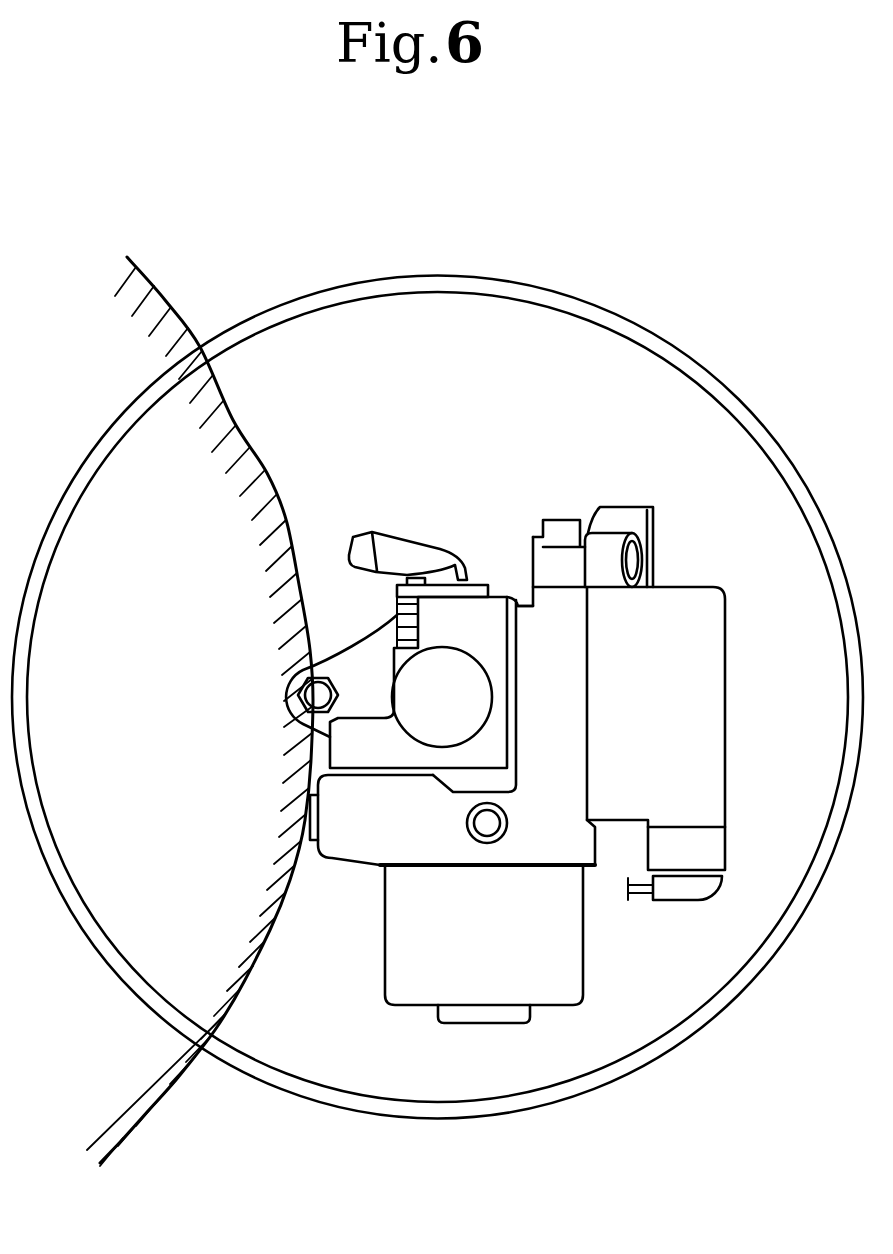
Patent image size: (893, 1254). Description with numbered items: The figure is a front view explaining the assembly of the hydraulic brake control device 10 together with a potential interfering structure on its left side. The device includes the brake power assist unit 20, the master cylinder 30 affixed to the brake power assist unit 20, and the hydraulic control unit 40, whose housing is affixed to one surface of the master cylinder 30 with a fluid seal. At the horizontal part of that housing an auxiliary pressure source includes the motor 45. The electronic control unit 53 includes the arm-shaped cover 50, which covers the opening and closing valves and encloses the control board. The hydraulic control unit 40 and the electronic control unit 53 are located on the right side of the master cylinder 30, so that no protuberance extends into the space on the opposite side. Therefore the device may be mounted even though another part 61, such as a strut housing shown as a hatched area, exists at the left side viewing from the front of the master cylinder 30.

The hydraulic brake control device 10 is at (723, 530).
The brake power assist unit 20 is at (670, 347).
The master cylinder 30 is at (505, 592).
The hydraulic control unit 40 is at (593, 865).
The motor 45 is at (578, 973).
The cover 50 is at (722, 703).
The electronic control unit 53 is at (728, 612).
The another part 61 is at (167, 297).